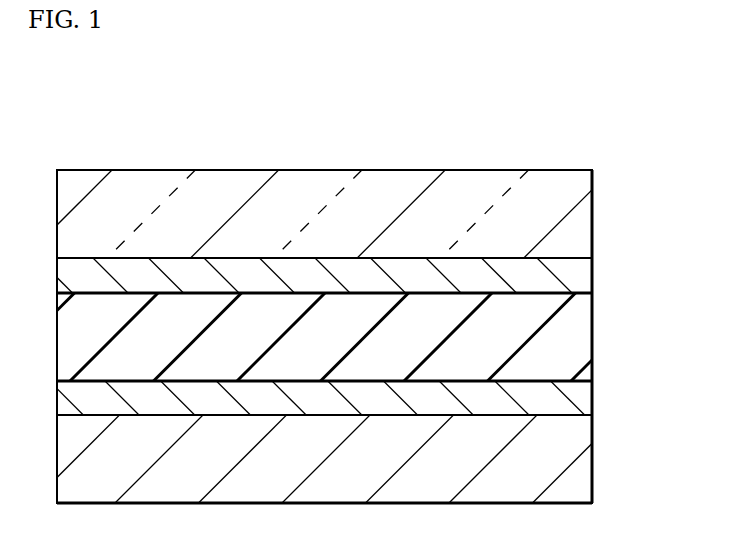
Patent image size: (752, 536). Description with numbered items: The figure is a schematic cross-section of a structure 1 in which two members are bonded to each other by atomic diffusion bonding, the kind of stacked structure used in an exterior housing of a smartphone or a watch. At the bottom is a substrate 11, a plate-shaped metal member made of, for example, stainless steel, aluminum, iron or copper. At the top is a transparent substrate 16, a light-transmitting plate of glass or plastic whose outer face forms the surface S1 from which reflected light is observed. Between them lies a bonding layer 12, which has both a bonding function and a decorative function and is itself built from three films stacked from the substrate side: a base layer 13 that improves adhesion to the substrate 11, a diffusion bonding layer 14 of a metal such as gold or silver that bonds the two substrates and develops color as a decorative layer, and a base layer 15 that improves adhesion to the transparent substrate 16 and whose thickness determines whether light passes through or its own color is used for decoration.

The structure 1 is at (653, 112).
The surface S1 is at (559, 169).
The transparent substrate 16 is at (583, 213).
The base layer 15 is at (583, 274).
The diffusion bonding layer 14 is at (583, 336).
The base layer 13 is at (350, 398).
The bonding layer 12 is at (351, 336).
The substrate 11 is at (583, 457).